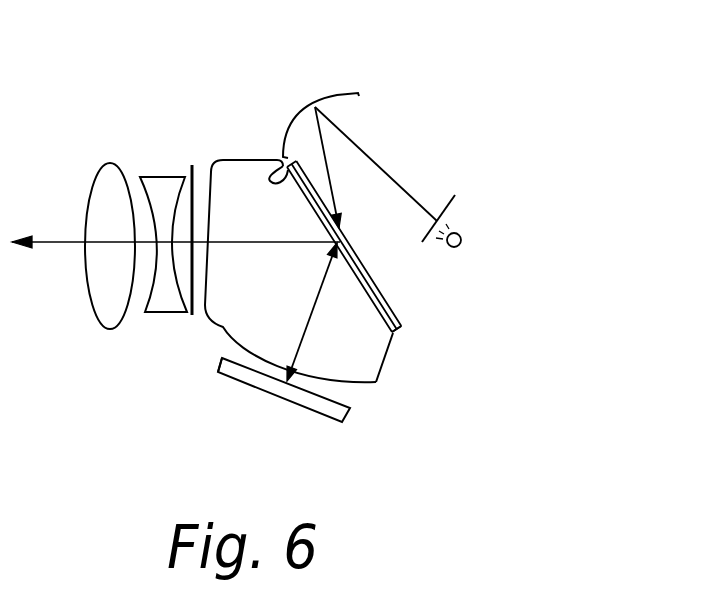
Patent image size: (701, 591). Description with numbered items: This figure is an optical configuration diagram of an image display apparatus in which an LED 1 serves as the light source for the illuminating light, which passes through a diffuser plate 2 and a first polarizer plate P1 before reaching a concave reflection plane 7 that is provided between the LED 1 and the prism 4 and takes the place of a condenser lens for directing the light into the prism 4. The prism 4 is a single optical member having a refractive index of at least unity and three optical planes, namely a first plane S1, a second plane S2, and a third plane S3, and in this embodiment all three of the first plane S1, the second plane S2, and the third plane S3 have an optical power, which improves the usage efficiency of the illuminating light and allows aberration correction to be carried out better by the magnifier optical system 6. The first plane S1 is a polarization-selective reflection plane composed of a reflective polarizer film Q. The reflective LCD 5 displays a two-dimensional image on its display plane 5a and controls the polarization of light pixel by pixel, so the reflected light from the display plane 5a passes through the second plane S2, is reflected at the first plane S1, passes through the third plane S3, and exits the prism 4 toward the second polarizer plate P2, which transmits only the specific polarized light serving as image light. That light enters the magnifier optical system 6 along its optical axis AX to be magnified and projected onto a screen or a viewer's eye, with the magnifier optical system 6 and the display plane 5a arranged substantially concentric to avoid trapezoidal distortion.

The LED 1 is at (462, 240).
The diffuser plate 2 is at (453, 203).
The prism 4 is at (386, 357).
The reflective LCD 5 is at (320, 415).
The display plane 5a is at (220, 353).
The magnifier optical system 6 is at (193, 336).
The concave reflection plane 7 is at (340, 93).
The first polarizer plate P1 is at (395, 303).
The second polarizer plate P2 is at (190, 167).
The reflective polarizer film Q is at (397, 333).
The first plane S1 is at (265, 163).
The second plane S2 is at (358, 383).
The third plane S3 is at (208, 162).
The optical axis AX is at (53, 245).